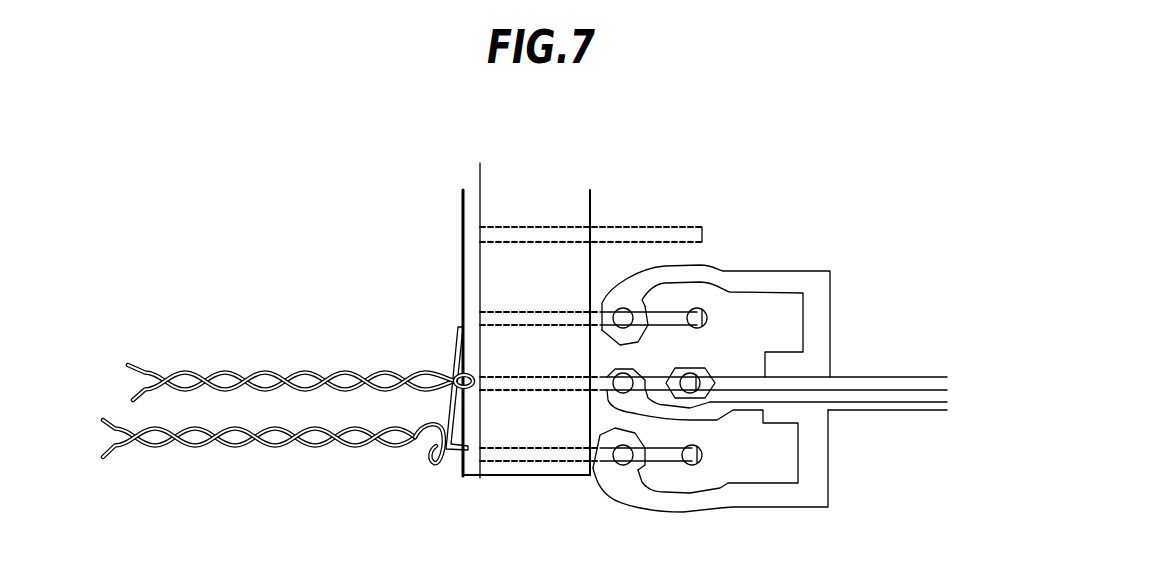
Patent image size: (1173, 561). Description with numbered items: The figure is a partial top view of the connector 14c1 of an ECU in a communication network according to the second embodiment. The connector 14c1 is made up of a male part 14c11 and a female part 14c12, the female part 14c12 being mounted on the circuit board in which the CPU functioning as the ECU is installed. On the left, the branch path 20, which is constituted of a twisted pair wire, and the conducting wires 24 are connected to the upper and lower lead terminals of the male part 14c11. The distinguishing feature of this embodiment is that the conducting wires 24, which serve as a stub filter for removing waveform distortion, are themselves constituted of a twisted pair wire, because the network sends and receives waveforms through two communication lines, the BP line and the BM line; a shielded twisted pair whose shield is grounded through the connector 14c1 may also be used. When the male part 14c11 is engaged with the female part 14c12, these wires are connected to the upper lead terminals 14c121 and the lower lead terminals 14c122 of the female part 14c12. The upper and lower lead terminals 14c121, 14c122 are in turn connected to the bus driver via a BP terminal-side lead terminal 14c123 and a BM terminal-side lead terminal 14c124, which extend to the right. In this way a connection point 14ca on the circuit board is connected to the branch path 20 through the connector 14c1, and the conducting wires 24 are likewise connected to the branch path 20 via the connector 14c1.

The connector 14c1 is at (365, 173).
The male part 14c11 is at (463, 217).
The female part 14c12 is at (477, 177).
The branch path 20 is at (363, 367).
The conducting wires 24 is at (363, 443).
The connection point 14ca is at (918, 298).
The upper lead terminals 14c121 is at (722, 420).
The lower lead terminals 14c122 is at (750, 270).
The BP terminal-side lead terminal 14c123 is at (878, 376).
The BM terminal-side lead terminal 14c124 is at (850, 410).